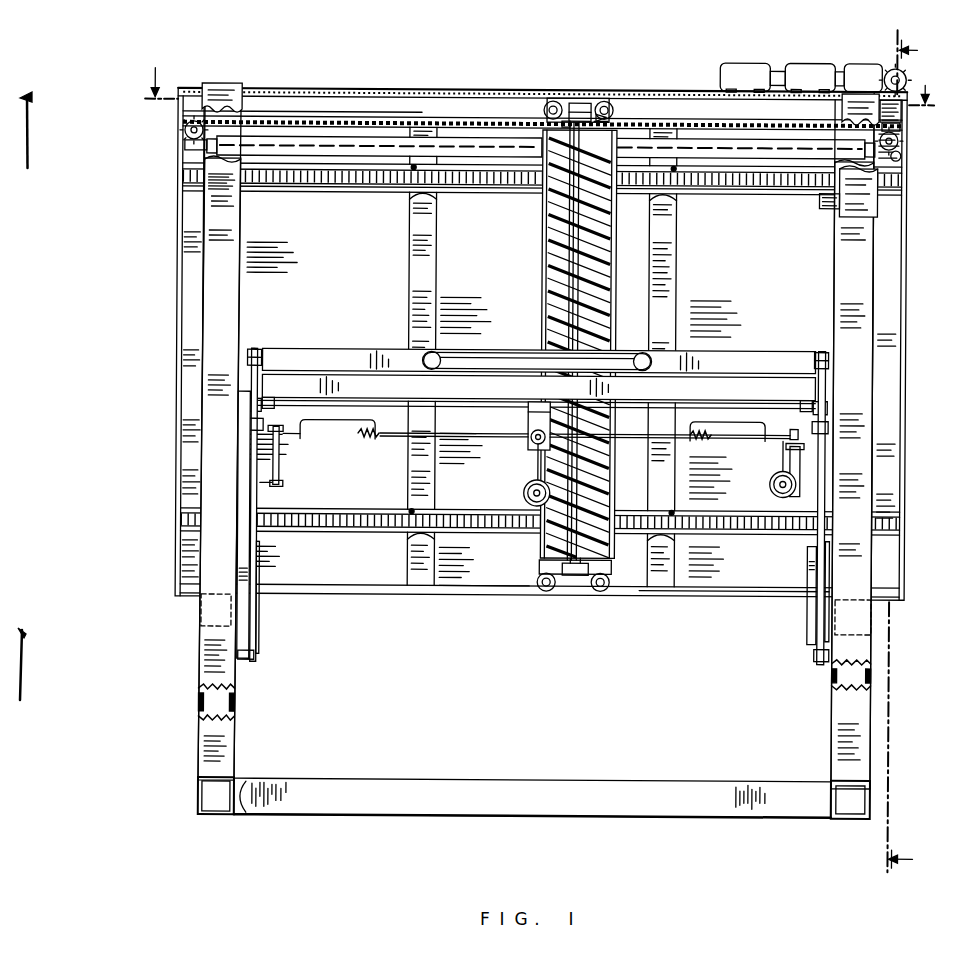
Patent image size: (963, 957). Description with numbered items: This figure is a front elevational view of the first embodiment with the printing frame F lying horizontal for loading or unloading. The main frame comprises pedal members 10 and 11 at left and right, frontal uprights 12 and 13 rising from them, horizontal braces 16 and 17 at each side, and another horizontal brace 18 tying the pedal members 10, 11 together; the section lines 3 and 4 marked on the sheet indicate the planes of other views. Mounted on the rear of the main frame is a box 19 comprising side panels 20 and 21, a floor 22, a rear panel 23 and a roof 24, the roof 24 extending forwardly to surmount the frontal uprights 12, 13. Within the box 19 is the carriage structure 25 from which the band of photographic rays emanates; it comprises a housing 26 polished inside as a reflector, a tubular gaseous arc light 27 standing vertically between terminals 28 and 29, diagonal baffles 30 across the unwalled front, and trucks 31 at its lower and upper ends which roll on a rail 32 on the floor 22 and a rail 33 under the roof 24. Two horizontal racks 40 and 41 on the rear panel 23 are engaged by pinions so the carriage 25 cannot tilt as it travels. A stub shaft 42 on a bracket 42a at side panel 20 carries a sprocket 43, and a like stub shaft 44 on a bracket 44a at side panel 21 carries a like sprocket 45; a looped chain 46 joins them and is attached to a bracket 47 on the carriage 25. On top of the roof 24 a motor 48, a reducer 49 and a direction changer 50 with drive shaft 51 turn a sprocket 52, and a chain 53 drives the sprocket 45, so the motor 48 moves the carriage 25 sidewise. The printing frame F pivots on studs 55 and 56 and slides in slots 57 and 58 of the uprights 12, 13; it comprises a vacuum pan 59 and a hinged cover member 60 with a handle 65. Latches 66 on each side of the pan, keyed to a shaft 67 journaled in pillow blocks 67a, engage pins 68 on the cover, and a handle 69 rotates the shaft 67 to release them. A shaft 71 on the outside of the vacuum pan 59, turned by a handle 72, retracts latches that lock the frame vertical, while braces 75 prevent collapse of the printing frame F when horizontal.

The section line 3- 3 is at (910, 451).
The section line 4- 4 is at (539, 74).
The pedal member 10 is at (220, 812).
The pedal member 11 is at (852, 816).
The frontal upright 12 is at (240, 104).
The frontal upright 13 is at (840, 716).
The horizontal brace 16 is at (201, 610).
The horizontal brace 17 is at (836, 616).
The horizontal brace 18 is at (518, 786).
The box 19 is at (716, 592).
The side panel 20 is at (181, 248).
The side panel 21 is at (903, 343).
The floor 22 is at (380, 596).
The rear panel 23 is at (263, 281).
The roof 24 is at (470, 98).
The carriage structure 25 is at (615, 326).
The housing 26 is at (546, 310).
The tubular gaseous arc light 27 is at (570, 242).
The terminal 28 is at (575, 572).
The terminal 29 is at (610, 108).
The baffles 30 is at (554, 266).
The trucks 31 is at (588, 106).
The rail 32 is at (484, 588).
The rail 33 is at (372, 100).
The rack 40 is at (380, 180).
The rack 41 is at (368, 520).
The stub shaft 42 is at (181, 133).
The bracket 42a is at (190, 148).
The sprocket 43 is at (211, 88).
The stub shaft 44 is at (897, 138).
The bracket 44a is at (890, 164).
The sprocket 45 is at (898, 154).
The chain 46 is at (322, 122).
The bracket 47 is at (574, 106).
The motor 48 is at (732, 68).
The reducer 49 is at (798, 68).
The direction changer 50 is at (848, 70).
The drive shaft 51 is at (886, 94).
The sprocket 52 is at (892, 66).
The chain 53 is at (896, 116).
The stud 55 is at (247, 660).
The stud 56 is at (827, 662).
The slot 57 is at (274, 478).
The slot 58 is at (794, 491).
The vacuum pan 59 is at (480, 390).
The cover member 60 is at (350, 360).
The handle 65 is at (464, 350).
The latch 66 is at (260, 364).
The shaft 67 is at (442, 400).
The pillow blocks 67a is at (270, 400).
The pin 68 is at (250, 346).
The handle 69 is at (776, 476).
The shaft 71 is at (532, 438).
The handle 72 is at (524, 491).
The braces 75 is at (260, 617).
The printing frame F is at (740, 348).